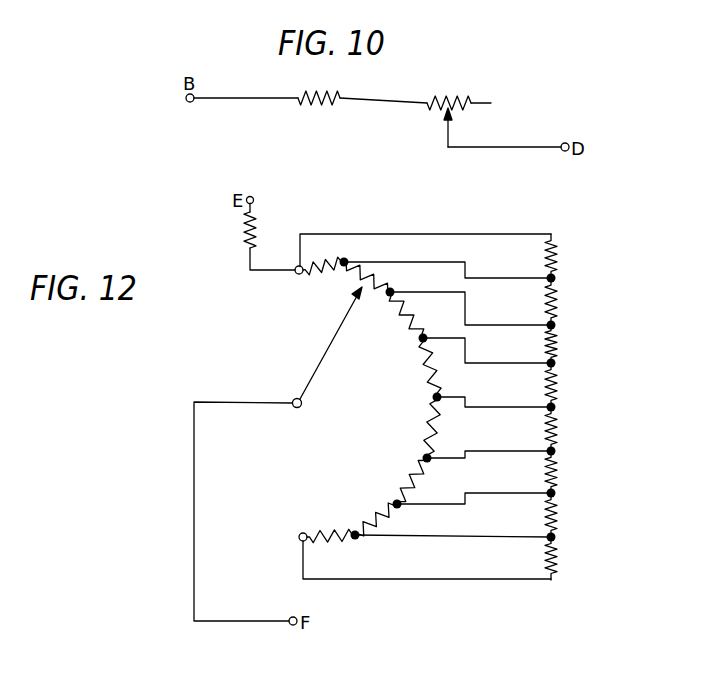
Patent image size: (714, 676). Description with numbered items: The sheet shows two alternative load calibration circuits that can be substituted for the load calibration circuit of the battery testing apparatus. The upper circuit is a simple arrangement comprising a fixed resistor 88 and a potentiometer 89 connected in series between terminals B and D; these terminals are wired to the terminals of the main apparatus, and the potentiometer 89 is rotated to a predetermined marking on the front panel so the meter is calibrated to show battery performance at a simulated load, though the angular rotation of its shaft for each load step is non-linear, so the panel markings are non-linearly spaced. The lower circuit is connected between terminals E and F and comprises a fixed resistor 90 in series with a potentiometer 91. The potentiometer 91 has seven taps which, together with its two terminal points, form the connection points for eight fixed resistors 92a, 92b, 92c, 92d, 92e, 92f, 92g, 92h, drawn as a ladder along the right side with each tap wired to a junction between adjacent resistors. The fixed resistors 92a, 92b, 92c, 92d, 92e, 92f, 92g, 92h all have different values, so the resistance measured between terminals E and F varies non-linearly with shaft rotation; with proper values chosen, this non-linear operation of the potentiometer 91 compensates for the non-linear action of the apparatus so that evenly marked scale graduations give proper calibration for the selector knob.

In FIG. 10, the fixed resistor 88 is at (324, 91).
In FIG. 10, the potentiometer 89 is at (462, 96).
In FIG. 12, the fixed resistor 90 is at (260, 221).
In FIG. 12, the potentiometer 91 is at (422, 431).
In FIG. 12, the fixed resistor 92a is at (558, 257).
In FIG. 12, the fixed resistor 92b is at (558, 301).
In FIG. 12, the fixed resistor 92c is at (558, 342).
In FIG. 12, the fixed resistor 92d is at (558, 387).
In FIG. 12, the fixed resistor 92e is at (558, 428).
In FIG. 12, the fixed resistor 92f is at (558, 472).
In FIG. 12, the fixed resistor 92g is at (558, 514).
In FIG. 12, the fixed resistor 92h is at (558, 560).